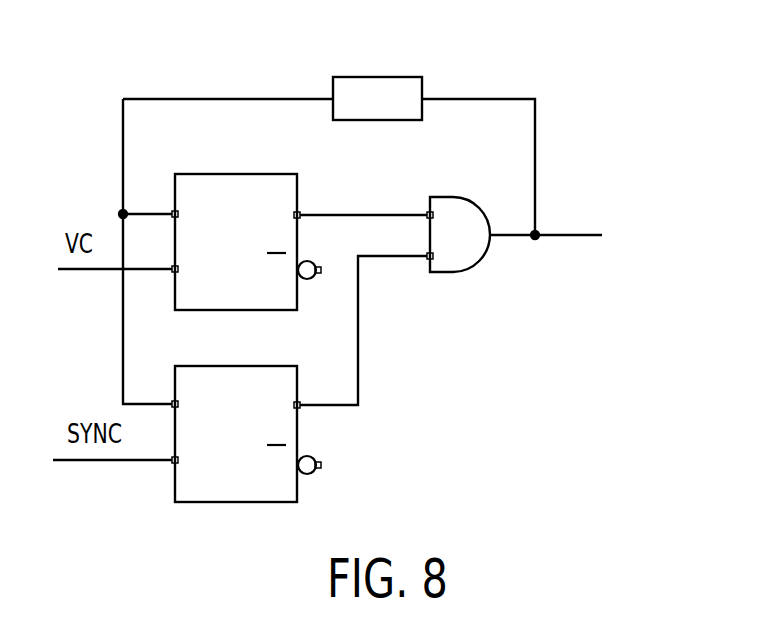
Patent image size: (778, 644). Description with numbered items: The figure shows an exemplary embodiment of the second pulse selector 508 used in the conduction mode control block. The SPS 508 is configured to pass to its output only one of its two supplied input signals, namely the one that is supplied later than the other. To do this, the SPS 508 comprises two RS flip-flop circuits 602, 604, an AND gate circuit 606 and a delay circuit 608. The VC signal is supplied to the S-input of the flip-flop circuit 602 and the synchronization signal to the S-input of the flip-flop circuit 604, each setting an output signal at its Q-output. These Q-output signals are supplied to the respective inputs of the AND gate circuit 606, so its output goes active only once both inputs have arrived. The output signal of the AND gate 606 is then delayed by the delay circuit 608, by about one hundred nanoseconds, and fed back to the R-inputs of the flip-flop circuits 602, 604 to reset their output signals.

The second pulse selector 508 is at (493, 382).
The RS flip-flop circuit 602 is at (283, 174).
The RS flip-flop circuit 604 is at (297, 366).
The AND gate circuit 606 is at (468, 267).
The delay circuit 608 is at (380, 77).